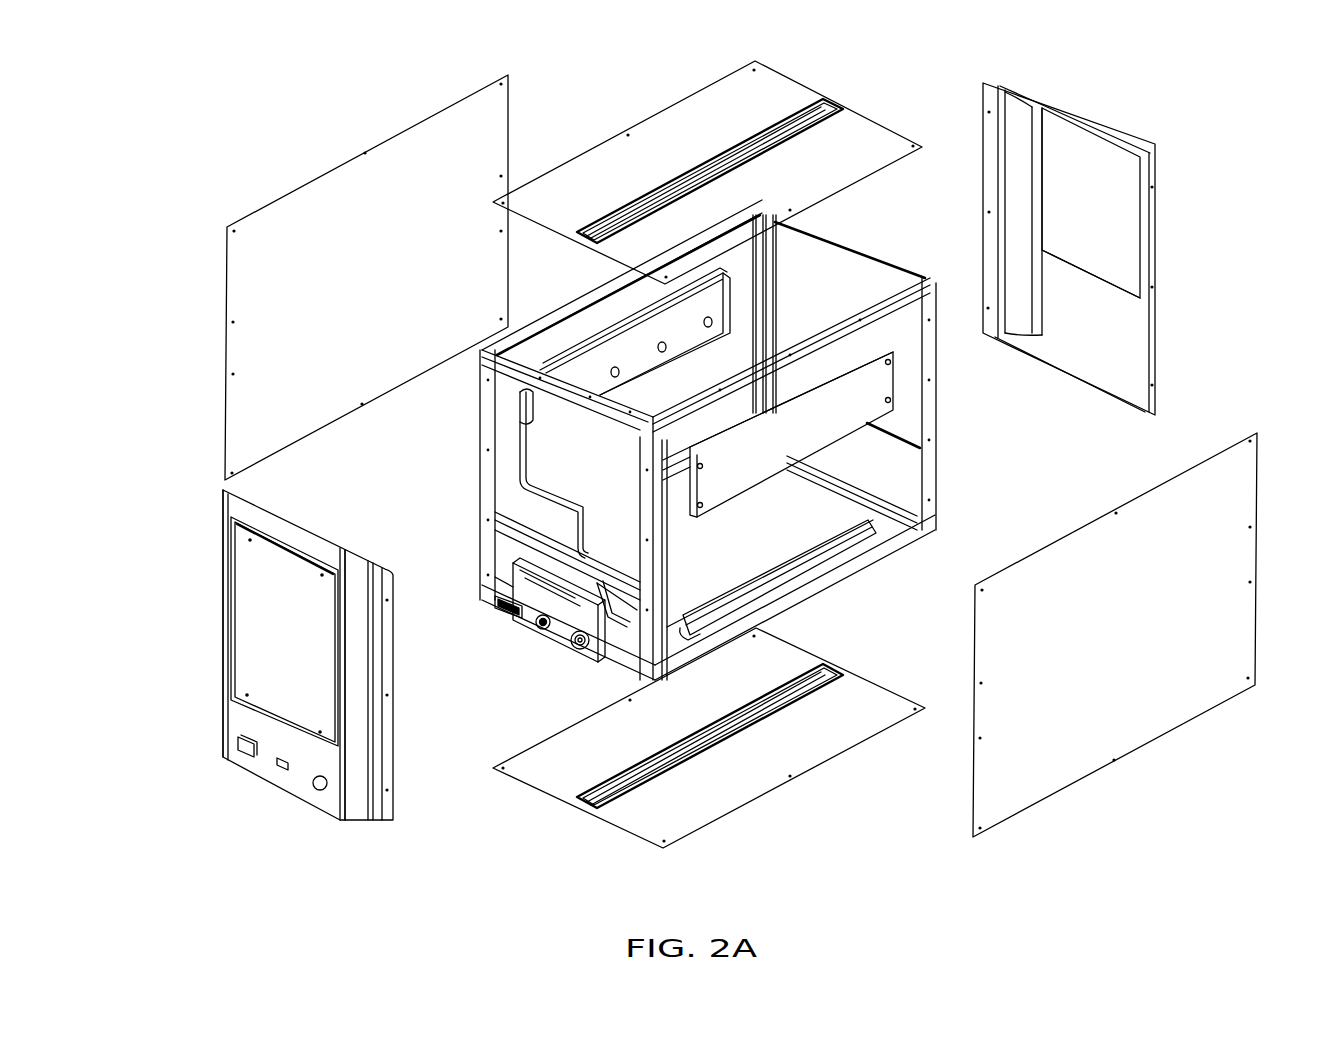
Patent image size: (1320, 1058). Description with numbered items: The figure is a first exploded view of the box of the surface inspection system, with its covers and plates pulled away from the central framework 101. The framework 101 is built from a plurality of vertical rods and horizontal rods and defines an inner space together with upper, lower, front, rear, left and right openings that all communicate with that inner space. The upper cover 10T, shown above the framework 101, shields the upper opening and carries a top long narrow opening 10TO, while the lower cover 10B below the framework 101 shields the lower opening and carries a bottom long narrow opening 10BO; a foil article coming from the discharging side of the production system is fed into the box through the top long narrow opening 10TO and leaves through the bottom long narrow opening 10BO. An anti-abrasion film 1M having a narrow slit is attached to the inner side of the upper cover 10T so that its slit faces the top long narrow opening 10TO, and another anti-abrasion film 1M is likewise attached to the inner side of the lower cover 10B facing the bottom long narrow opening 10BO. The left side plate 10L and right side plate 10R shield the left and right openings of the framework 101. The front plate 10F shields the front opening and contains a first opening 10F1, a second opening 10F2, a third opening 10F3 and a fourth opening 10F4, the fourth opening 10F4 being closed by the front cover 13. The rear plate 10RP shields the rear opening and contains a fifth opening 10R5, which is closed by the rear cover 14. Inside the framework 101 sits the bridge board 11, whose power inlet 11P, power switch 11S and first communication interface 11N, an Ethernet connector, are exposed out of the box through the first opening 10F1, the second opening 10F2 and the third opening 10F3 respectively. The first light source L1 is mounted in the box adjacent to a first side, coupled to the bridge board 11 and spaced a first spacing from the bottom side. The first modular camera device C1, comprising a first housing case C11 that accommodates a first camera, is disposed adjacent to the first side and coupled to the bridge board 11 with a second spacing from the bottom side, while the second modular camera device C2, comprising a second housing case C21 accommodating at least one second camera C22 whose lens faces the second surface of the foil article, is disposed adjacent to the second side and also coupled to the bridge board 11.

The right side plate 10R is at (265, 215).
The upper cover 10T is at (668, 122).
The top long narrow opening 10TO is at (808, 105).
The anti-abrasion film 1M is at (846, 108).
The rear plate 10RP is at (1160, 146).
The rear cover 14 is at (1090, 155).
The fifth opening 10R5 is at (1110, 289).
The left side plate 10L is at (1202, 467).
The lower cover 10B is at (812, 760).
The bottom long narrow opening 10BO is at (605, 810).
The front plate 10F is at (222, 750).
The front cover 13 is at (233, 633).
The first opening 10F1 is at (240, 735).
The second opening 10F2 is at (319, 790).
The third opening 10F3 is at (282, 771).
The fourth opening 10F4 is at (346, 707).
The framework 101 is at (870, 232).
The second housing case C21 is at (595, 312).
The second camera C22 is at (712, 320).
The first housing case C11 is at (864, 358).
The first modular camera device C1 is at (898, 373).
The second modular camera device C2 is at (518, 405).
The bridge board 11 is at (518, 633).
The power inlet 11P is at (477, 612).
The first communication interface 11N is at (546, 630).
The power switch 11S is at (584, 650).
The first light source L1 is at (848, 540).